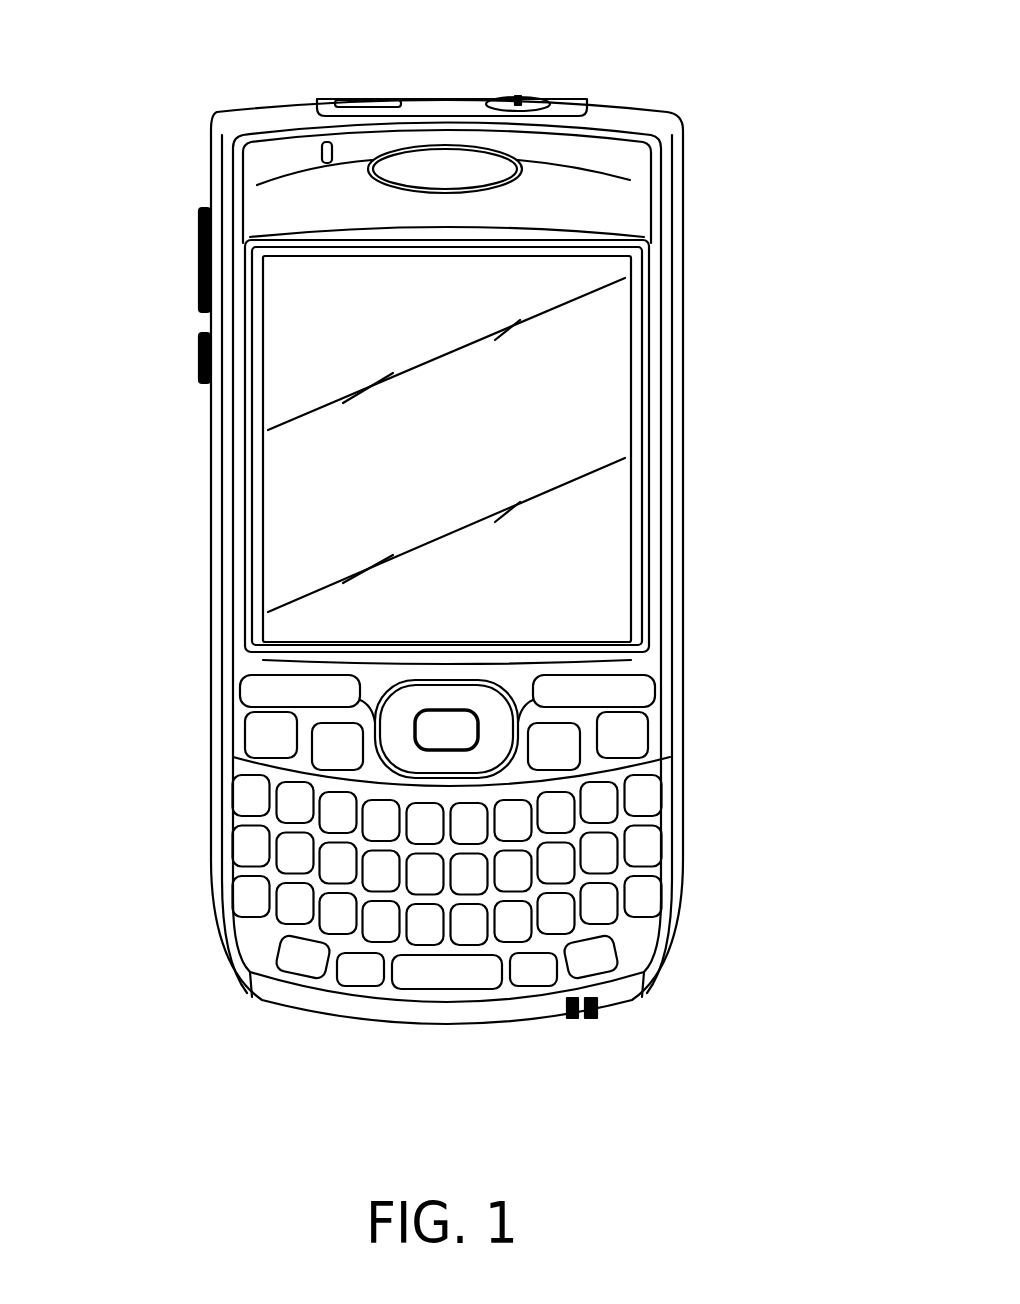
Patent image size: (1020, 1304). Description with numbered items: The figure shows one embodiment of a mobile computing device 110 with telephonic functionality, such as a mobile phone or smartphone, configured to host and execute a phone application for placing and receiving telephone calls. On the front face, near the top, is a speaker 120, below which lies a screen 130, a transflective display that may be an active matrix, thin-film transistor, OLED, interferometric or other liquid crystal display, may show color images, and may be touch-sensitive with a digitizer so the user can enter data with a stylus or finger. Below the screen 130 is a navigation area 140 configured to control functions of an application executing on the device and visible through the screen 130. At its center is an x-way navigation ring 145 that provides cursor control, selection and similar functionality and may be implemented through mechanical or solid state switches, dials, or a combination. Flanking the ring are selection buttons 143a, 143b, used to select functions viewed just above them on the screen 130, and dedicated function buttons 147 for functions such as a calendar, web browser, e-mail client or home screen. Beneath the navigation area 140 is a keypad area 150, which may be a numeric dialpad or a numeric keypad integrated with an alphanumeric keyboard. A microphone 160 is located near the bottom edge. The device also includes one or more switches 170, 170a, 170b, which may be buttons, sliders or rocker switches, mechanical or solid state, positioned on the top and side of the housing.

The mobile computing device 110 is at (677, 123).
The speaker 120 is at (438, 160).
The screen 130 is at (595, 405).
The navigation area 140 is at (488, 682).
The selection button 143a is at (268, 685).
The selection button 143b is at (608, 688).
The navigation ring 145 is at (490, 707).
The dedicated function buttons 147 is at (333, 748).
The keypad area 150 is at (695, 778).
The microphone 160 is at (587, 1025).
The switch 170 is at (527, 88).
The switch 170a is at (197, 248).
The switch 170b is at (197, 360).